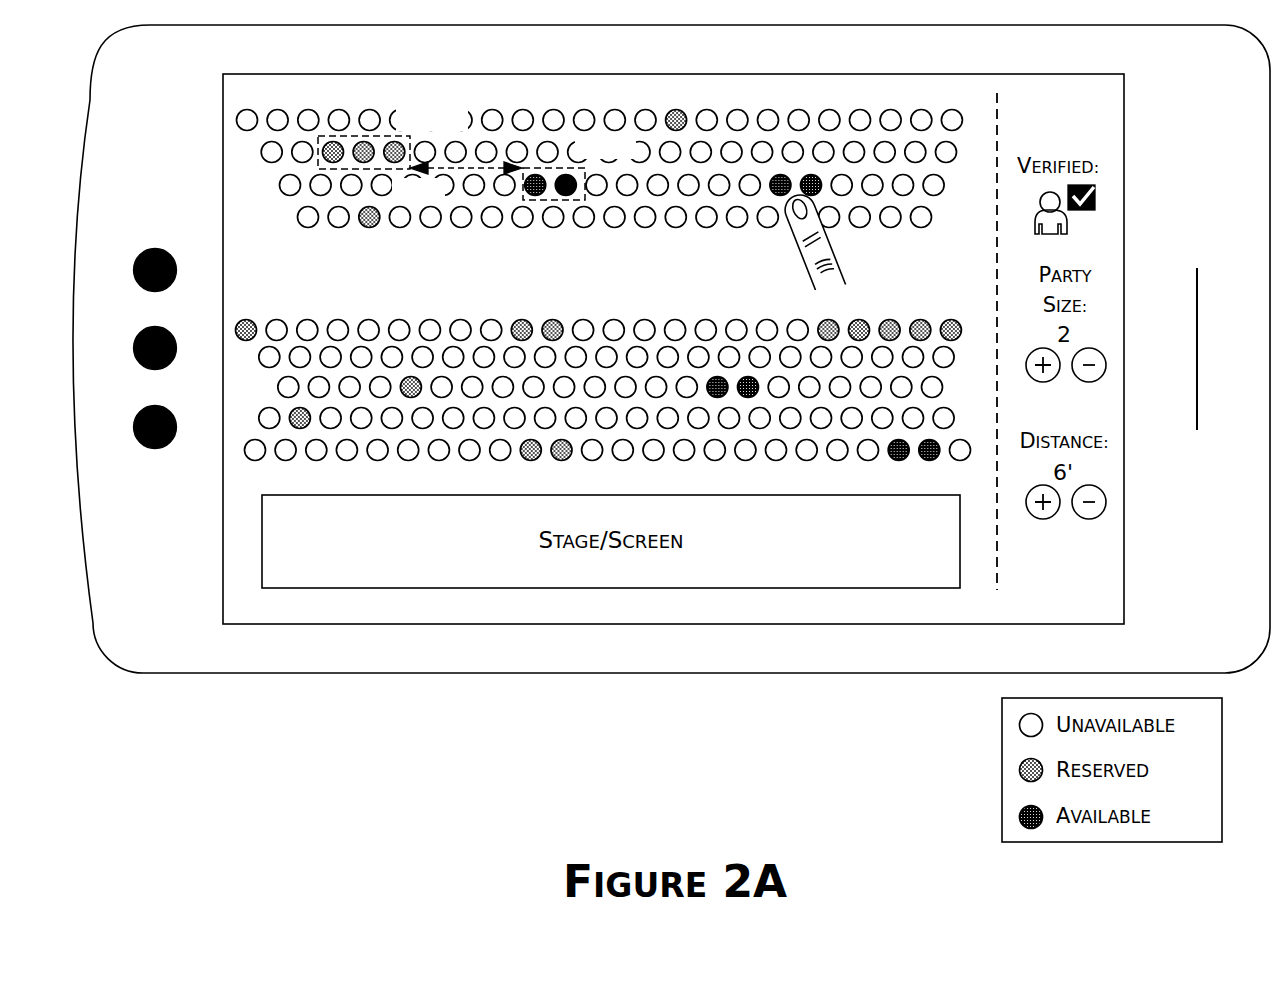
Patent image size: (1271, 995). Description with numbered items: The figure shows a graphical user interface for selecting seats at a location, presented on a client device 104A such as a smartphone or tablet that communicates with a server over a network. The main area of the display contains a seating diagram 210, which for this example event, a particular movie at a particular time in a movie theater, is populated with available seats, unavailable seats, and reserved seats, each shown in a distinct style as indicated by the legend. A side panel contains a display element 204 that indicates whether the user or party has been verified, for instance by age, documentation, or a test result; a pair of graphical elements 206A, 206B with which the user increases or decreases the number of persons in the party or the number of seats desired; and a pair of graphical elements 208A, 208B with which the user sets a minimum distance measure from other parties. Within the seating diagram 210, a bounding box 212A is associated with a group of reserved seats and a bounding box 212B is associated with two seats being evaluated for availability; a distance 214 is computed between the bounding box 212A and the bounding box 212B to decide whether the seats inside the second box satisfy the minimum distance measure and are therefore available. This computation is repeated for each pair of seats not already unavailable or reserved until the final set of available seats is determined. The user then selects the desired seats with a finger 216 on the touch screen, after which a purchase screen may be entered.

The client device 104A is at (187, 104).
The seating diagram 210 is at (908, 84).
The bounding box 212A is at (430, 129).
The bounding box 212B is at (602, 153).
The distance 214 is at (448, 169).
The finger 216 is at (842, 272).
The display element 204 is at (1112, 196).
The graphical element 206A is at (1043, 382).
The graphical element 206B is at (1101, 353).
The graphical element 208A is at (1043, 519).
The graphical element 208B is at (1101, 490).